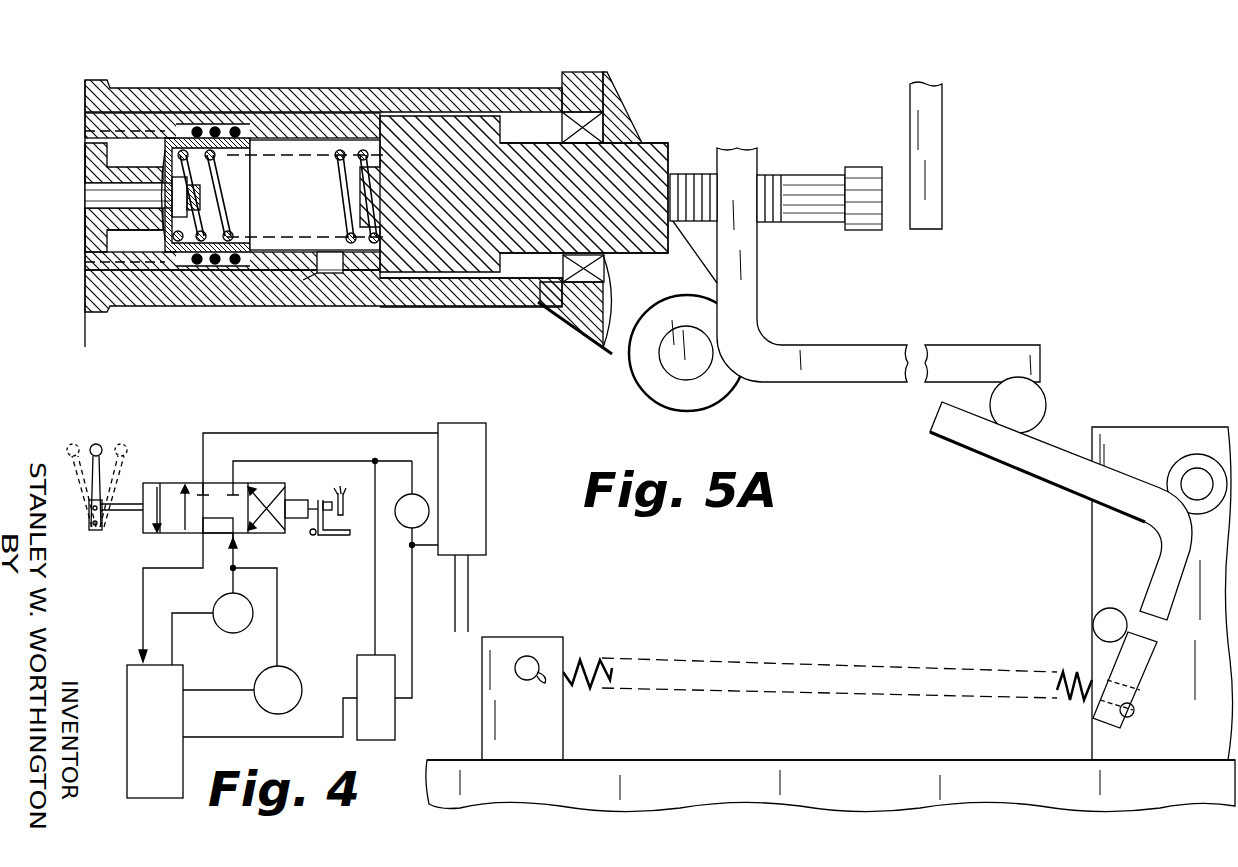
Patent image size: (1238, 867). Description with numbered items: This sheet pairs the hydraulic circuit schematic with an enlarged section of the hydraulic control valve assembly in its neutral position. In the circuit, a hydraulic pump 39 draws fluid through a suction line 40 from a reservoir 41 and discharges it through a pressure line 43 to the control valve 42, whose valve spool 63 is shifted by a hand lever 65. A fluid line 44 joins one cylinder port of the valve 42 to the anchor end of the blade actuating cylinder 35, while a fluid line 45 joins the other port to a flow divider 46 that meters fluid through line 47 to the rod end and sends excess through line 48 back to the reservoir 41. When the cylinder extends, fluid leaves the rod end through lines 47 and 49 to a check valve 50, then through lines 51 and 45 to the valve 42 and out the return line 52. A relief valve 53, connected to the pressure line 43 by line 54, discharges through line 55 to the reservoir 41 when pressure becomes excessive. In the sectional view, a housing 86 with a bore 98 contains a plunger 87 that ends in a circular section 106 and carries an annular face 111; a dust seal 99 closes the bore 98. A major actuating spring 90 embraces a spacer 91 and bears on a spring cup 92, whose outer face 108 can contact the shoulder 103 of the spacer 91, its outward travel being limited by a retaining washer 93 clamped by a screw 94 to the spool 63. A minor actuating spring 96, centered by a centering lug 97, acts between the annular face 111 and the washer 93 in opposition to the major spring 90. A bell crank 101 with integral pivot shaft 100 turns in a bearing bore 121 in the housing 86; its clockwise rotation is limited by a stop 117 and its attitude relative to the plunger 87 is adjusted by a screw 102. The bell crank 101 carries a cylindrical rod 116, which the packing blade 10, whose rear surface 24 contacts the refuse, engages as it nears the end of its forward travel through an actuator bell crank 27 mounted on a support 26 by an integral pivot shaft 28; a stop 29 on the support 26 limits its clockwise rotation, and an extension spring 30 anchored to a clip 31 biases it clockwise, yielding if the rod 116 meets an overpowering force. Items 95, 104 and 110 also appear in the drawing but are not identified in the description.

In FIG. 5A, the packing and unloading blade 10 is at (817, 777).
In FIG. 5A, the surface 24 is at (683, 762).
In FIG. 5A, the support 26 is at (1108, 425).
In FIG. 5A, the actuator bell crank 27 is at (1056, 485).
In FIG. 5A, the pivot shaft 28 is at (1200, 478).
In FIG. 5A, the stop 29 is at (1097, 627).
In FIG. 5A, the extension spring 30 is at (1060, 688).
In FIG. 5A, the clip 31 is at (537, 645).
In FIG. 4, the blade actuating cylinder 35 is at (486, 503).
In FIG. 4, the hydraulic pump 39 is at (240, 630).
In FIG. 4, the suction line 40 is at (205, 614).
In FIG. 4, the reservoir 41 is at (127, 781).
In FIG. 5A, the control valve 42 is at (395, 86).
In FIG. 4, the control valve 42 is at (172, 483).
In FIG. 4, the pressure line 43 is at (240, 540).
In FIG. 4, the fluid line 44 is at (383, 433).
In FIG. 4, the fluid line 45 is at (350, 461).
In FIG. 4, the flow divider 46 is at (370, 742).
In FIG. 4, the line 47 is at (412, 632).
In FIG. 4, the line 48 is at (240, 738).
In FIG. 4, the line 49 is at (412, 546).
In FIG. 4, the check valve 50 is at (400, 502).
In FIG. 4, the line 51 is at (414, 465).
In FIG. 4, the return line 52 is at (143, 607).
In FIG. 4, the relief valve 53 is at (295, 672).
In FIG. 4, the line 54 is at (278, 605).
In FIG. 4, the line 55 is at (205, 690).
In FIG. 4, the valve spool 63 is at (133, 502).
In FIG. 4, the valve handle 65 is at (92, 444).
In FIG. 5A, the housing 86 is at (497, 307).
In FIG. 5A, the plunger 87 is at (328, 298).
In FIG. 5A, the major actuating spring 90 is at (216, 128).
In FIG. 5A, the spacer 91 is at (88, 178).
In FIG. 5A, the spring cup 92 is at (193, 128).
In FIG. 5A, the retaining washer 93 is at (160, 162).
In FIG. 5A, the screw 94 is at (95, 193).
In FIG. 5A, the spring cup 95 is at (252, 138).
In FIG. 5A, the minor actuating spring 96 is at (333, 150).
In FIG. 5A, the centering lug 97 is at (367, 277).
In FIG. 5A, the bore 98 is at (537, 307).
In FIG. 5A, the dust seal 99 is at (612, 350).
In FIG. 5A, the pivot shaft 100 is at (680, 367).
In FIG. 5A, the bell crank 101 is at (827, 383).
In FIG. 4, the bell crank 101 is at (335, 543).
In FIG. 5A, the adjusting screw 102 is at (810, 177).
In FIG. 5A, the shoulder 103 is at (118, 250).
In FIG. 5A, the sleeve 104 is at (133, 163).
In FIG. 5A, the circular section 106 is at (658, 150).
In FIG. 5A, the outer face 108 is at (148, 243).
In FIG. 5A, the passage 110 is at (267, 307).
In FIG. 5A, the annular face 111 is at (397, 267).
In FIG. 5A, the rod 116 is at (1033, 387).
In FIG. 5A, the stop 117 is at (932, 208).
In FIG. 4, the stop 117 is at (358, 478).
In FIG. 5A, the bearing bore 121 is at (700, 375).